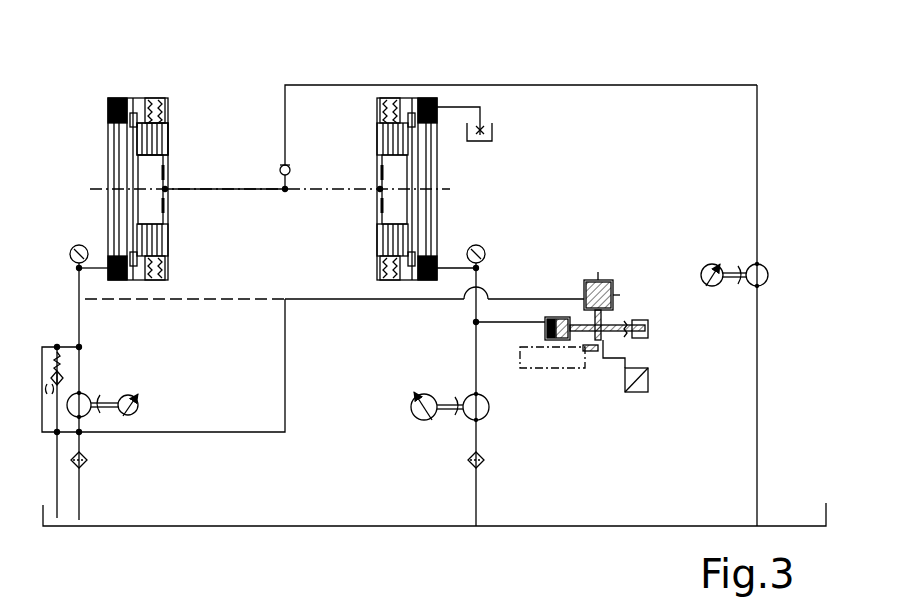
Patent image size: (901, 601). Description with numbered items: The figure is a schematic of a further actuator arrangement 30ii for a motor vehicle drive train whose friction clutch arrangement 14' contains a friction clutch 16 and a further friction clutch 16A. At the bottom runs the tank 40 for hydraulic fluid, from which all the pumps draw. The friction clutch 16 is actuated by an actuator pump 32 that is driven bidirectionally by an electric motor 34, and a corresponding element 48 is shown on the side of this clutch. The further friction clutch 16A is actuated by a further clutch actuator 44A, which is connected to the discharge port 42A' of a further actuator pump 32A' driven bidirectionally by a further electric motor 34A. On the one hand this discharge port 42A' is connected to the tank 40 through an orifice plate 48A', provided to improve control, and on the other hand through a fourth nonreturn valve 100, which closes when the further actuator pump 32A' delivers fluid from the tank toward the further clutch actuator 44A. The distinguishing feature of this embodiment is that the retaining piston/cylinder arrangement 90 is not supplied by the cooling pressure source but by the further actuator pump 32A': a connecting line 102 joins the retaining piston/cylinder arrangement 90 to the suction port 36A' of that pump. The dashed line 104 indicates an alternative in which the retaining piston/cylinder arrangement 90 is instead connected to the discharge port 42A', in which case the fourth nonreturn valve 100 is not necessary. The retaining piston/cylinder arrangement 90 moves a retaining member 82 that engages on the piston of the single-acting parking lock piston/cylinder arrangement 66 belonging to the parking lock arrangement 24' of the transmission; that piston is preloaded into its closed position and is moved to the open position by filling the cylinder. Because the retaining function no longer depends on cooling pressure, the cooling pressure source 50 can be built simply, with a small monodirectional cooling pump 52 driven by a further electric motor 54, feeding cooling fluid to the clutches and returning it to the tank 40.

The friction clutch arrangement 14' is at (521, 82).
The actuator arrangement 30ii is at (765, 78).
The further clutch actuator 44A is at (112, 105).
The further friction clutch 16A is at (160, 133).
The friction clutch 16 is at (378, 137).
The tank 48 is at (485, 124).
The alternative connection 104 is at (232, 298).
The connecting line 102 is at (288, 372).
The orifice plate 48A' is at (50, 413).
The fourth nonreturn valve 100 is at (63, 345).
The discharge port 42A' is at (112, 369).
The further actuator pump 32A' is at (124, 369).
The further electric motor 34A is at (139, 406).
The suction port 36A' is at (119, 456).
The actuator pump 32 is at (490, 408).
The electric motor 34 is at (415, 418).
The parking lock arrangement 24' is at (600, 290).
The retaining piston/cylinder arrangement 90 is at (590, 283).
The retaining member 82 is at (607, 320).
The parking lock piston/cylinder arrangement 66 is at (648, 349).
The cooling pressure source 50 is at (758, 245).
The cooling pump 52 is at (768, 277).
The further electric motor 54 is at (708, 264).
The tank 40 is at (577, 527).